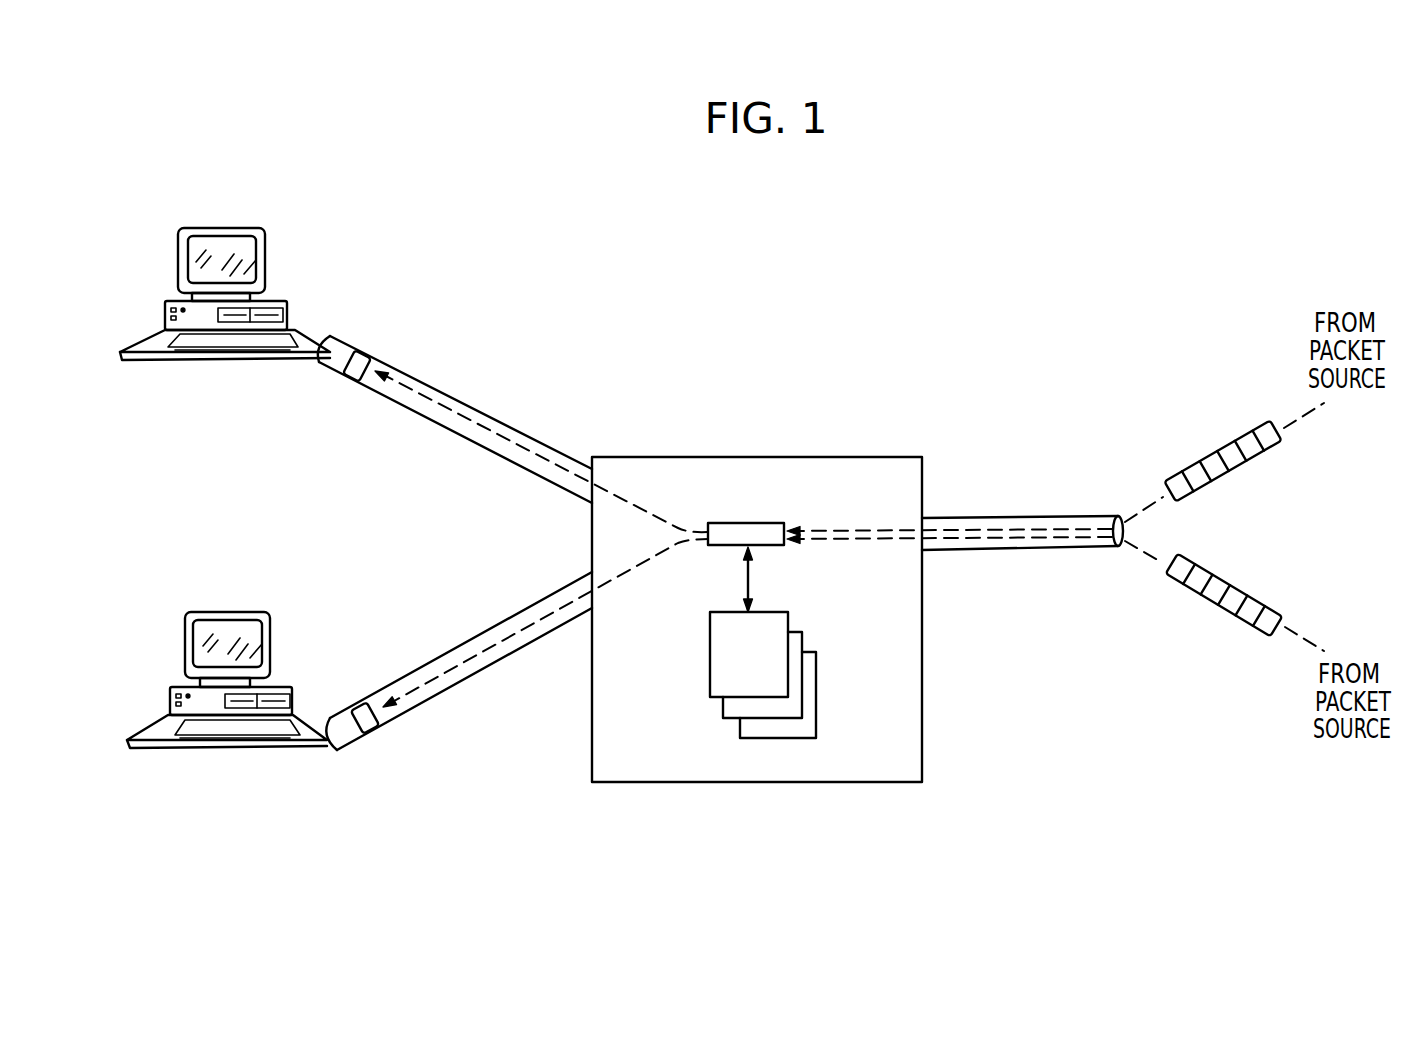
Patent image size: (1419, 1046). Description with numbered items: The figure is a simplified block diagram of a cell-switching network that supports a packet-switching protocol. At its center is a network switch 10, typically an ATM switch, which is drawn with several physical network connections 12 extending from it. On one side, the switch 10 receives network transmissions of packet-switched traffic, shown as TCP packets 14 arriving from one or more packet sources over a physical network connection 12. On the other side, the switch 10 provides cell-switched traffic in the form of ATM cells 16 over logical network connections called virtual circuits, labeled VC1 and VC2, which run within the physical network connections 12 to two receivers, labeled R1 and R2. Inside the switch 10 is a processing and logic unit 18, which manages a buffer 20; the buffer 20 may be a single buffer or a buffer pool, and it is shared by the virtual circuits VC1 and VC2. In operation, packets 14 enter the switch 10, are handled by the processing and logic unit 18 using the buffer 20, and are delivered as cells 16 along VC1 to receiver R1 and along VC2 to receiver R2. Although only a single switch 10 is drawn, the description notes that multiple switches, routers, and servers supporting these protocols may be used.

The network switch 10 is at (825, 455).
The physical network connection 12 is at (449, 434).
The TCP packets 14 is at (1183, 470).
The ATM cells 16 is at (355, 374).
The processing and logic unit 18 is at (740, 526).
The buffer 20 is at (854, 675).
The receiver R1 is at (203, 256).
The receiver R2 is at (207, 640).
The virtual circuit VC1 is at (450, 406).
The virtual circuit VC2 is at (449, 672).